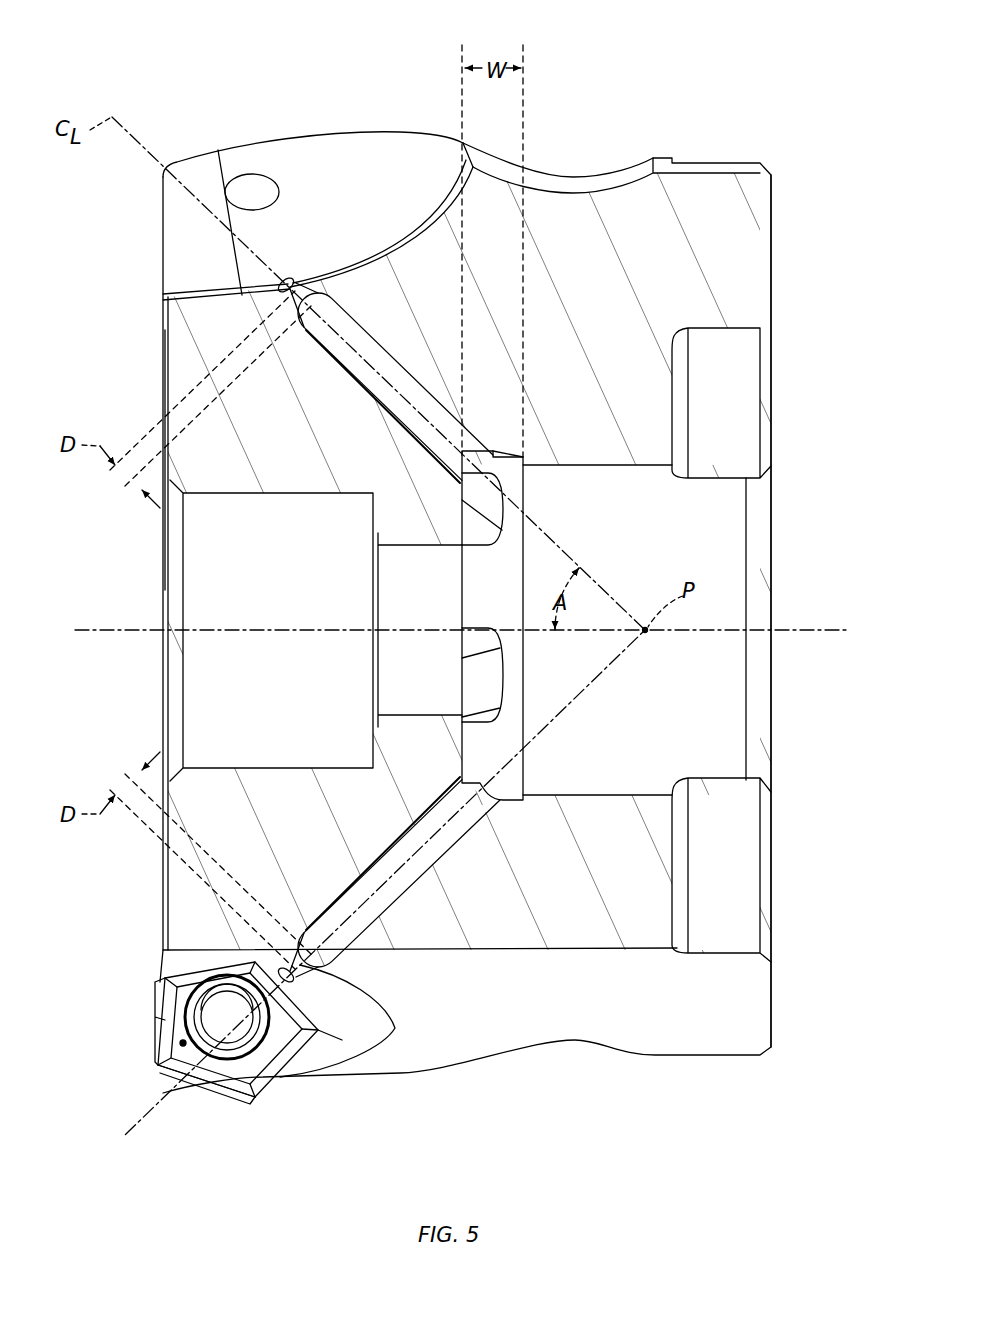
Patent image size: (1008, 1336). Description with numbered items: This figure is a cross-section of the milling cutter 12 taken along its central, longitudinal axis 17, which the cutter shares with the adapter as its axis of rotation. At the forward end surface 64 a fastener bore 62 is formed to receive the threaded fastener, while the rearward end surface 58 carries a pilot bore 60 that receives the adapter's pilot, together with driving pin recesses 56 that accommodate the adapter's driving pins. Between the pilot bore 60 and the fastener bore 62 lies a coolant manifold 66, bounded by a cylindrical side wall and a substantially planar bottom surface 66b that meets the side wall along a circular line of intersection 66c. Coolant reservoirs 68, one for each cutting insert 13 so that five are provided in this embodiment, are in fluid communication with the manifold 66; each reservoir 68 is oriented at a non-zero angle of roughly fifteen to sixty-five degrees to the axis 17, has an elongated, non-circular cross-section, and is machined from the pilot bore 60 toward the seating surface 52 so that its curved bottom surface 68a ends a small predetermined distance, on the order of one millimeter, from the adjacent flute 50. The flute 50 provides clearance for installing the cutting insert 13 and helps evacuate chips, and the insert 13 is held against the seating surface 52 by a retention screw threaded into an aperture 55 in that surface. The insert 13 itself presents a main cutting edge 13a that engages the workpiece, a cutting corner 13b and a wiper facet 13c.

The milling cutter 12 is at (711, 72).
The cutting insert 13 is at (254, 1108).
The main cutting edge 13a is at (185, 1065).
The cutting corner 13b is at (160, 1064).
The wiper facet 13c is at (158, 1035).
The aperture 55 is at (218, 1010).
The flute 50 is at (356, 165).
The seating surface 52 is at (296, 158).
The driving pin recess 56 is at (752, 345).
The rearward end surface 58 is at (790, 392).
The pilot bore 60 is at (697, 692).
The fastener bore 62 is at (213, 680).
The forward end surface 64 is at (155, 380).
The coolant manifold 66 is at (510, 777).
The bottom surface 66b is at (470, 750).
The circular line of intersection 66c is at (462, 452).
The coolant reservoir 68 is at (352, 377).
The curved bottom surface 68a is at (514, 458).
The central, longitudinal axis 17 is at (85, 630).